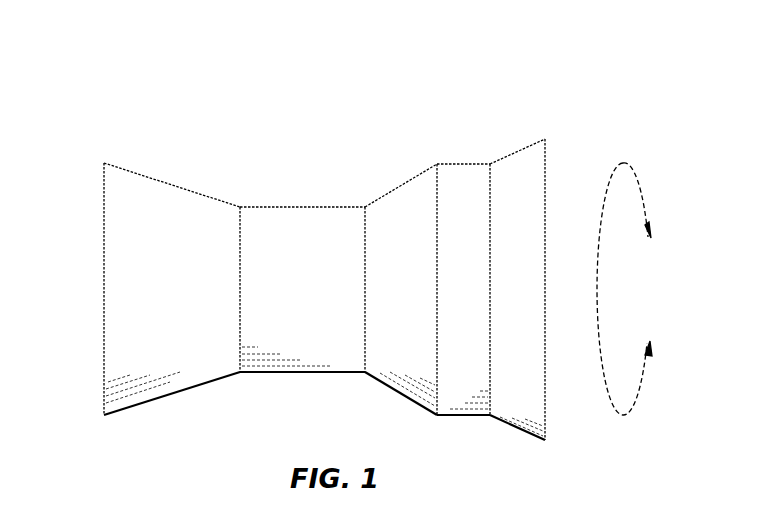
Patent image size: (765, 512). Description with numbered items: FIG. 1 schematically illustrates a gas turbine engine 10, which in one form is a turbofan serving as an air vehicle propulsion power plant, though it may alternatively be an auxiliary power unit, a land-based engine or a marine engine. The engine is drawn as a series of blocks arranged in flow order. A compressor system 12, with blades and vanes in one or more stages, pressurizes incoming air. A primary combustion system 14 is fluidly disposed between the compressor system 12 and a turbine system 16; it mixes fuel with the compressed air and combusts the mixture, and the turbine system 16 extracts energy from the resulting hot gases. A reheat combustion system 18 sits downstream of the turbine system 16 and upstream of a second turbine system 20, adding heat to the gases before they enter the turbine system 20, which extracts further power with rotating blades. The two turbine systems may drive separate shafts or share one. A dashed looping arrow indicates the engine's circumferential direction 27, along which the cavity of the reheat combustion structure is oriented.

The gas turbine engine 10 is at (138, 76).
The compressor system 12 is at (172, 186).
The primary combustion system 14 is at (303, 207).
The turbine system 16 is at (403, 184).
The reheat combustion system 18 is at (465, 163).
The turbine system 20 is at (515, 152).
The circumferential direction 27 is at (623, 163).